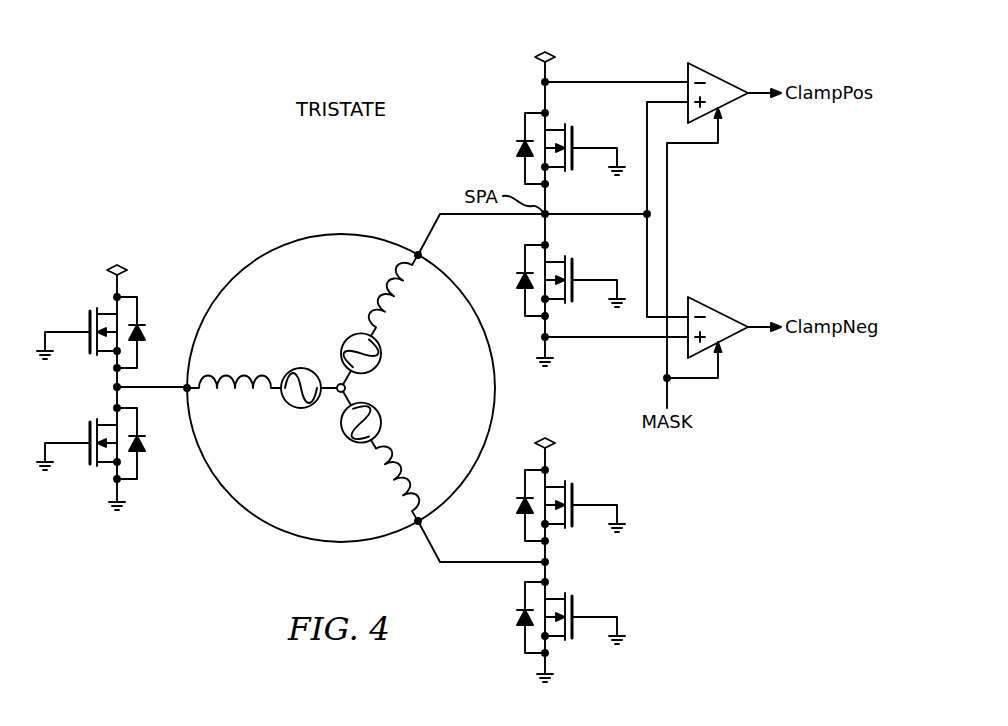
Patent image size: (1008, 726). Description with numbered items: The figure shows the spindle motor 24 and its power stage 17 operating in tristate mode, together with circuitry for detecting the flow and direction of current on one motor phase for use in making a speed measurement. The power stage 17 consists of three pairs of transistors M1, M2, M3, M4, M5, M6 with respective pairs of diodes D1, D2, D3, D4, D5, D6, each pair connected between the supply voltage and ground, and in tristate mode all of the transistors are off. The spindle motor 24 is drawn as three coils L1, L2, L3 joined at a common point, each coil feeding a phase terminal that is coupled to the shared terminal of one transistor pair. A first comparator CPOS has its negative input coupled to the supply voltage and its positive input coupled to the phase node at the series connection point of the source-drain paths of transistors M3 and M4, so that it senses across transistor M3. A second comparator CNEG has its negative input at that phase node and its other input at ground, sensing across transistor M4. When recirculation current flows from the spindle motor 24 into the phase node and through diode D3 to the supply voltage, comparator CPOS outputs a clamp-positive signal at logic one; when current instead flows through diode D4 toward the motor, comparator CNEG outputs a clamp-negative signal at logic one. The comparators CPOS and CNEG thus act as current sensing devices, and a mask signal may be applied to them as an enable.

The power stage 17 is at (330, 356).
The spindle motor 24 is at (341, 383).
The transistor M1 is at (78, 323).
The transistor M2 is at (78, 434).
The transistor M3 is at (583, 139).
The transistor M4 is at (583, 271).
The transistor M5 is at (583, 496).
The transistor M6 is at (583, 608).
The diode D1 is at (145, 332).
The diode D2 is at (145, 443).
The diode D3 is at (517, 148).
The diode D4 is at (517, 280).
The diode D5 is at (517, 505).
The diode D6 is at (517, 617).
The coil L1 is at (234, 369).
The coil L2 is at (387, 295).
The coil L3 is at (403, 480).
The first comparator CPOS is at (734, 82).
The second comparator CNEG is at (734, 317).